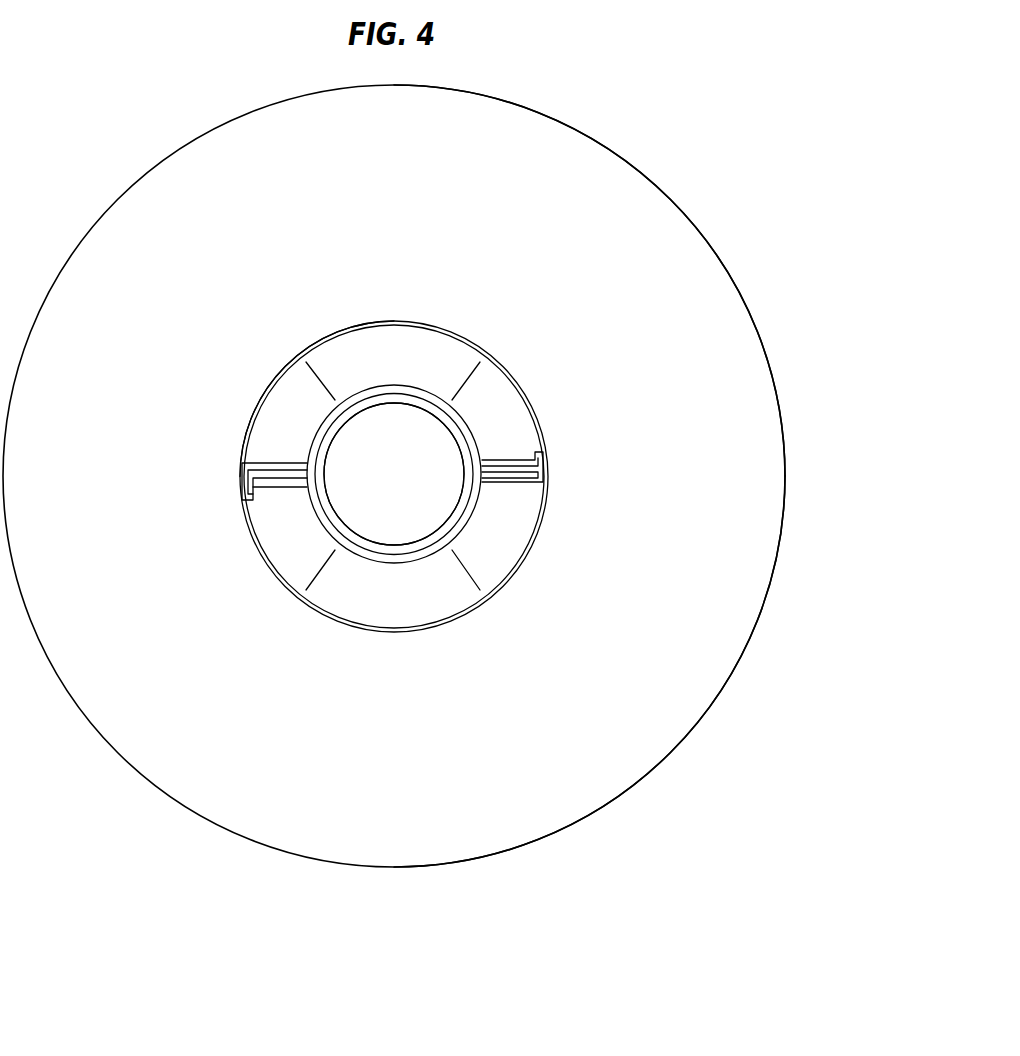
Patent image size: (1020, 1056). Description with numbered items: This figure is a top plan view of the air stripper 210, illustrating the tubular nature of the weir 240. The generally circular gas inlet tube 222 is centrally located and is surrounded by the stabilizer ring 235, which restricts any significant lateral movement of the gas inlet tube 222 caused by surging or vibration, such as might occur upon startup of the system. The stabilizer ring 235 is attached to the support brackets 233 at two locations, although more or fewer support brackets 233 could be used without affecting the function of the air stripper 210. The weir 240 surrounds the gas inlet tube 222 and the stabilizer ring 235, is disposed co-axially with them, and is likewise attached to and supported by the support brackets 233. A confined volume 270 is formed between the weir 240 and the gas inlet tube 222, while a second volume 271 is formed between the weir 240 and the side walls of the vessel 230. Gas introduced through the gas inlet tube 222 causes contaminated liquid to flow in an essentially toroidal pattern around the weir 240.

The air stripper 210 is at (612, 85).
The gas inlet tube 222 is at (415, 408).
The vessel 230 is at (703, 238).
The support brackets 233 is at (505, 486).
The stabilizer ring 235 is at (412, 385).
The weir 240 is at (517, 379).
The confined volume 270 is at (303, 435).
The second volume 271 is at (703, 352).